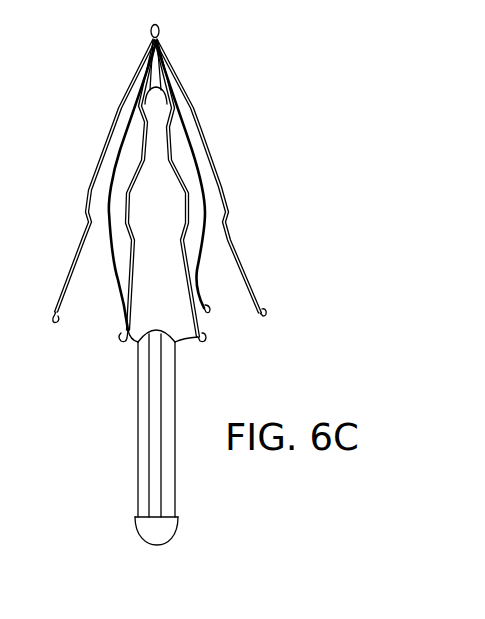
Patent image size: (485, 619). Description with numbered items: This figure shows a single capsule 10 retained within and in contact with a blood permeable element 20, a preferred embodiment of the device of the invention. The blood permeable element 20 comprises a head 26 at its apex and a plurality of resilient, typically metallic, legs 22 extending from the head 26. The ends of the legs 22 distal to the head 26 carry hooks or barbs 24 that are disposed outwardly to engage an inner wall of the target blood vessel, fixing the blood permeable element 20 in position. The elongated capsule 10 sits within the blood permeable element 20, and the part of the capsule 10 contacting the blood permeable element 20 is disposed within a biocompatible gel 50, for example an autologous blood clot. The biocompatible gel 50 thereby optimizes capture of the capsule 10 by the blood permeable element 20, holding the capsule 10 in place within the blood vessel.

The capsule 10 is at (129, 428).
The blood permeable element 20 is at (237, 180).
The legs 22 is at (114, 138).
The hooks or barbs 24 is at (55, 322).
The head 26 is at (158, 27).
The biocompatible gel 50 is at (193, 242).